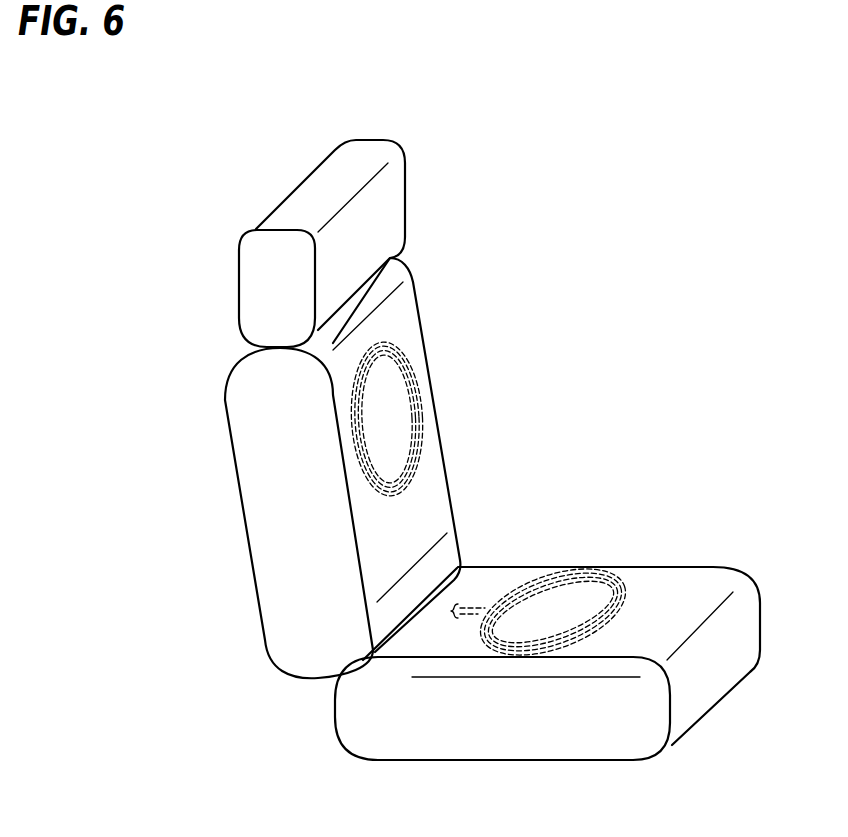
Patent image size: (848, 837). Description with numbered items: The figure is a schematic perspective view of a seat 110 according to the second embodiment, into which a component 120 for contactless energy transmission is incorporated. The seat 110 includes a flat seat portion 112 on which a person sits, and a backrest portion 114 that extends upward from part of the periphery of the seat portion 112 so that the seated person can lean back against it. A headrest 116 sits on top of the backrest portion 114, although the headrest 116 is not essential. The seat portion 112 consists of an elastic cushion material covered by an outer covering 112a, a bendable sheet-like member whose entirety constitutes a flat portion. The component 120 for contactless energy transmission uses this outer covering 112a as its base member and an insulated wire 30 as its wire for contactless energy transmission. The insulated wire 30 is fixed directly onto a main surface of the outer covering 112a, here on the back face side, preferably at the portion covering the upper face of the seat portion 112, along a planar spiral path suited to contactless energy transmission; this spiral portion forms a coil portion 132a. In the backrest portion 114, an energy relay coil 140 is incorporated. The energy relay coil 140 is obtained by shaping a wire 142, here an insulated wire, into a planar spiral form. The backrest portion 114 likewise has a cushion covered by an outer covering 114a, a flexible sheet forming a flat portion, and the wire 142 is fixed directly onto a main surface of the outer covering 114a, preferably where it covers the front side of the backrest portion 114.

The seat 110 is at (363, 117).
The headrest 116 is at (302, 197).
The backrest portion 114 is at (230, 368).
The outer covering 114a is at (434, 452).
The energy relay coil 140 is at (414, 363).
The wire 142 is at (421, 400).
The seat portion 112 is at (578, 761).
The outer covering 112a is at (688, 580).
The component for contactless energy transmission 120 is at (582, 557).
The coil portion 132a is at (628, 585).
The insulated wire 30 is at (472, 608).